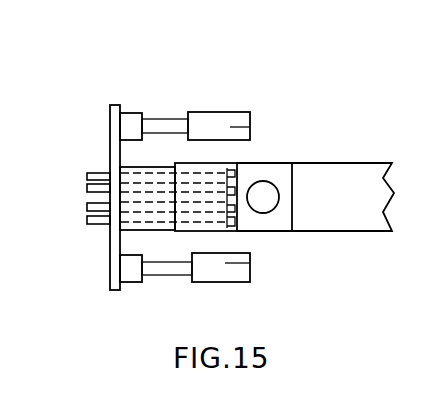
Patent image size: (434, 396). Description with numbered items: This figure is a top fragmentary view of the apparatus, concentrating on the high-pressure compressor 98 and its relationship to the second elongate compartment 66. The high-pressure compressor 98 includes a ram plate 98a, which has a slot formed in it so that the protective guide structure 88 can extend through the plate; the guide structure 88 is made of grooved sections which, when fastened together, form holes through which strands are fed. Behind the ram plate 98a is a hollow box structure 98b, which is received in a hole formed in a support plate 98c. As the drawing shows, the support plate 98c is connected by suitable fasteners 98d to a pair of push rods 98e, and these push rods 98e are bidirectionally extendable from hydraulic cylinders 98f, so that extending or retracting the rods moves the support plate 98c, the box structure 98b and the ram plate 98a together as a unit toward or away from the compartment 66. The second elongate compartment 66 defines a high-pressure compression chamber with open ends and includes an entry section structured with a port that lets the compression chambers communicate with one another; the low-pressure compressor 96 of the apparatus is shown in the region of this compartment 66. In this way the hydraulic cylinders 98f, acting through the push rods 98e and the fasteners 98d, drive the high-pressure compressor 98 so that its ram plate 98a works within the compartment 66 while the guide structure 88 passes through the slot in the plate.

The high-pressure compressor 98 is at (108, 138).
The ram plate 98a is at (233, 162).
The hollow box structure 98b is at (138, 229).
The support plate 98c is at (114, 104).
The fasteners 98d is at (133, 113).
The push rods 98e is at (188, 114).
The hydraulic cylinders 98f is at (247, 112).
The protective guide structure 88 is at (87, 176).
The second elongate compartment 66 is at (349, 163).
The low-pressure compressor 96 is at (268, 214).